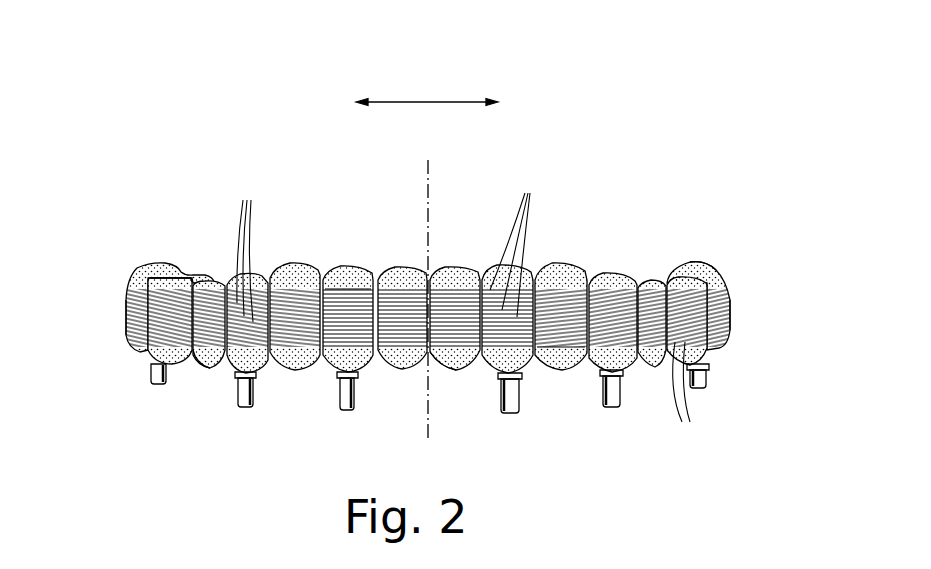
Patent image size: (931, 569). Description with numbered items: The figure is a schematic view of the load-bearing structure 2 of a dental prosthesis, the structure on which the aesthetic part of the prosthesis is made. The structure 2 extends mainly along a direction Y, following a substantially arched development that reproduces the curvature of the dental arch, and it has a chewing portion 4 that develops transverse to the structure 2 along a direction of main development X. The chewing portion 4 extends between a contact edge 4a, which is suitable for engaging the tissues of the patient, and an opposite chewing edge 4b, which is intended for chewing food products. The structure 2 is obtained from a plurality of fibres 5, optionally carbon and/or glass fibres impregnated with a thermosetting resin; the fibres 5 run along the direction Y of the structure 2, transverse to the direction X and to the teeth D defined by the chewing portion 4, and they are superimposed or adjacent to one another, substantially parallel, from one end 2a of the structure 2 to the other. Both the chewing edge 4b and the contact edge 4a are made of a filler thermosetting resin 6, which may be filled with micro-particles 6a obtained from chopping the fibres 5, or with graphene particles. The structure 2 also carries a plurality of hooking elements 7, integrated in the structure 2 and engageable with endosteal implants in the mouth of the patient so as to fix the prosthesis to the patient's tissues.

The load-bearing structure 2 is at (440, 318).
The end of the structure 2a is at (126, 322).
The chewing portion 4 is at (428, 325).
The contact edge 4a is at (537, 350).
The chewing edge 4b is at (355, 268).
The fibres 5 is at (467, 311).
The filler thermosetting resin 6 is at (468, 316).
The micro-particles 6a is at (174, 268).
The hooking element 7 is at (155, 380).
The teeth D is at (162, 266).
The direction of main development X is at (428, 188).
The direction Y y is at (422, 102).